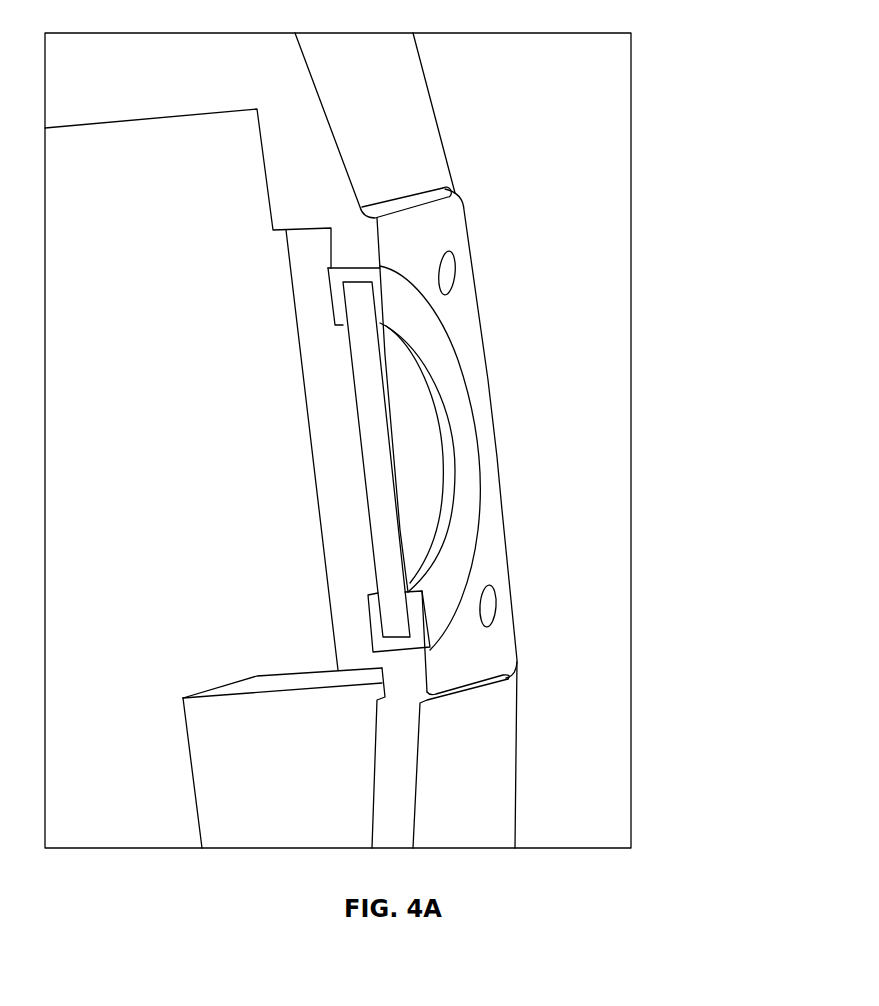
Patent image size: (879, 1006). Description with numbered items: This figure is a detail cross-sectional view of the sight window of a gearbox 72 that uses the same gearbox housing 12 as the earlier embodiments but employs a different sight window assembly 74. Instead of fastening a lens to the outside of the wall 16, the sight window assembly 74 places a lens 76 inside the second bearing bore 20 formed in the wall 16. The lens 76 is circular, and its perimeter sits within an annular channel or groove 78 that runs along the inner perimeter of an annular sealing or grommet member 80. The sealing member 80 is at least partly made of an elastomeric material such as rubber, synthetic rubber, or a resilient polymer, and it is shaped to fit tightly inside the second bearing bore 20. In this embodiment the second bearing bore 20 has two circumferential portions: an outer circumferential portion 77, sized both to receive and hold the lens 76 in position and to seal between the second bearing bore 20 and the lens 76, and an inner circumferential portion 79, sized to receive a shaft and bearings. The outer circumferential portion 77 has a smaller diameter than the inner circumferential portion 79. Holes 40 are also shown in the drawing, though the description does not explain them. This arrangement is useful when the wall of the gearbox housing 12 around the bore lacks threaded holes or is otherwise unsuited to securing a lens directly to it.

The gearbox housing 12 is at (427, 65).
The wall 16 is at (493, 748).
The second bearing bore 20 is at (362, 268).
The mounting holes 40 is at (450, 250).
The gearbox 72 is at (680, 424).
The sight window assembly 74 is at (516, 385).
The lens 76 is at (428, 468).
The outer circumferential portion 77 is at (347, 268).
The annular channel 78 is at (412, 620).
The inner circumferential portion 79 is at (303, 230).
The sealing member 80 is at (437, 340).